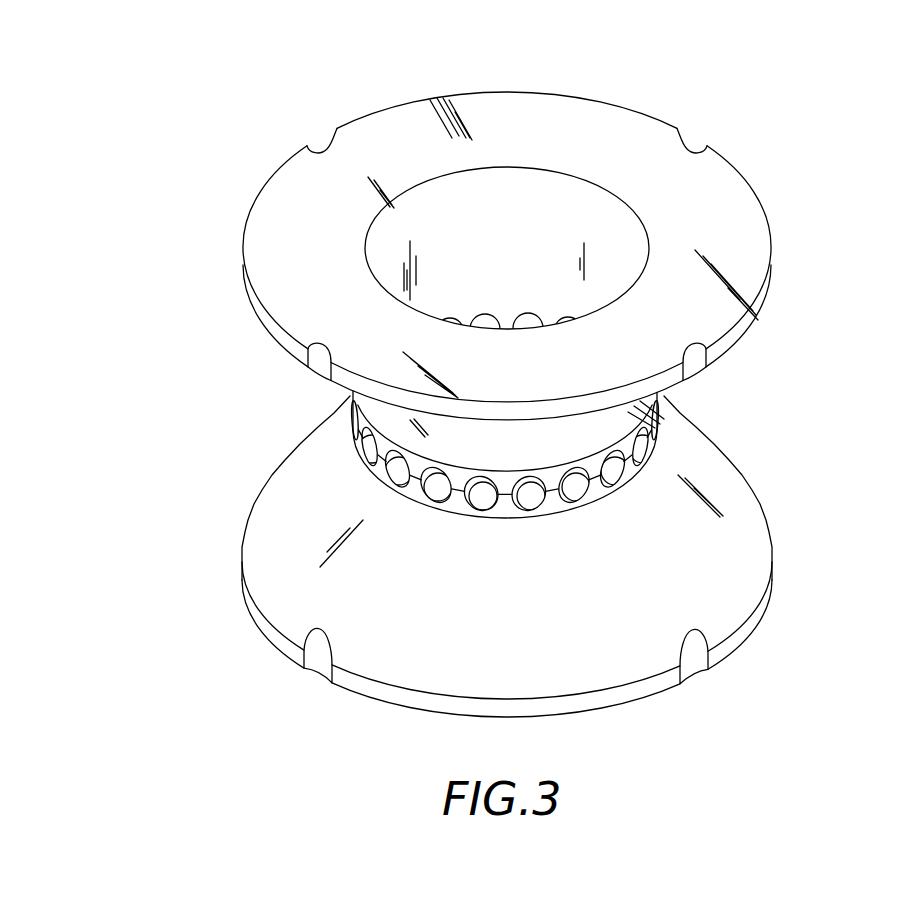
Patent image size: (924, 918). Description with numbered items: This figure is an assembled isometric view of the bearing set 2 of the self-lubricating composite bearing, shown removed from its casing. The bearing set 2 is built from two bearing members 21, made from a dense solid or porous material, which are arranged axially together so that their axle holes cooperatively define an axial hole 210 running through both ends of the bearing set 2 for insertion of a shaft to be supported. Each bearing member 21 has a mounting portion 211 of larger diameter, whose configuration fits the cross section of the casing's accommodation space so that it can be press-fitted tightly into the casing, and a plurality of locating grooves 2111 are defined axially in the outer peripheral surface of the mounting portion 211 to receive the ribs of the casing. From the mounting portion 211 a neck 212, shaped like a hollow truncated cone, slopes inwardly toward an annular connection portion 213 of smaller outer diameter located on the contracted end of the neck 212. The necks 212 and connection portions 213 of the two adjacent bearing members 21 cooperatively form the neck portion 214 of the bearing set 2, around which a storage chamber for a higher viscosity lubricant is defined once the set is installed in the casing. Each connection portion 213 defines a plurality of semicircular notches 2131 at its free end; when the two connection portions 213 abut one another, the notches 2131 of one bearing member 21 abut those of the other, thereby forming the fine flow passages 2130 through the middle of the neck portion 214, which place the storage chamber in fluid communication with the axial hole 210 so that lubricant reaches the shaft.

The bearing set 2 is at (226, 463).
The bearing member 21 is at (766, 306).
The axial hole 210 is at (511, 196).
The mounting portion 211 is at (718, 222).
The locating grooves 2111 is at (690, 142).
The neck 212 is at (652, 414).
The connection portion 213 is at (656, 456).
The fine flow passages 2130 is at (531, 516).
The semicircular notches 2131 is at (478, 516).
The neck portion 214 is at (850, 383).